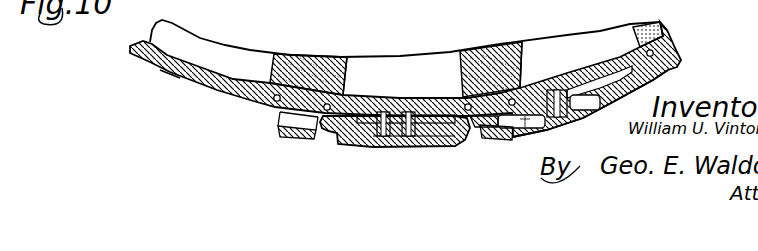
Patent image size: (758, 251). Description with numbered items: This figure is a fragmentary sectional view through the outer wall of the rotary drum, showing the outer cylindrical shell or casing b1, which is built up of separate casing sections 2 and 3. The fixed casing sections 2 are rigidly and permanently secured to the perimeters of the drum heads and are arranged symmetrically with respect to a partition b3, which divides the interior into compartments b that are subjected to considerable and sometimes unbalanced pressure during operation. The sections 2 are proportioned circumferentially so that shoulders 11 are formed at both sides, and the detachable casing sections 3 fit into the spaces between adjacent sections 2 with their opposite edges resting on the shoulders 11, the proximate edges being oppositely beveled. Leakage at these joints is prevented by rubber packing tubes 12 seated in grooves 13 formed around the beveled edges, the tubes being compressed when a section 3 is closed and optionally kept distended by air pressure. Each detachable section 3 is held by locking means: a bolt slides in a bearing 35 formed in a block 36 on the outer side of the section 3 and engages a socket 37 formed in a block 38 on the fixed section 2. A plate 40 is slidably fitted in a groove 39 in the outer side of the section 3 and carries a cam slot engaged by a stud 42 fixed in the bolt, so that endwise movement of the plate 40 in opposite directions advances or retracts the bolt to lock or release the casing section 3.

The casing section 2 is at (282, 108).
The casing section 3 is at (210, 82).
The shoulder 11 is at (340, 82).
The rubber tube 12 is at (274, 100).
The groove 13 is at (662, 30).
The bearing 35 is at (586, 113).
The block 36 is at (355, 147).
The socket 37 is at (293, 122).
The block 38 is at (307, 134).
The groove 39 is at (400, 145).
The plate 40 is at (424, 116).
The stud 42 is at (410, 112).
The compartment b is at (263, 67).
The outer cylindrical shell or casing b1 is at (168, 78).
The partition b3 is at (497, 37).